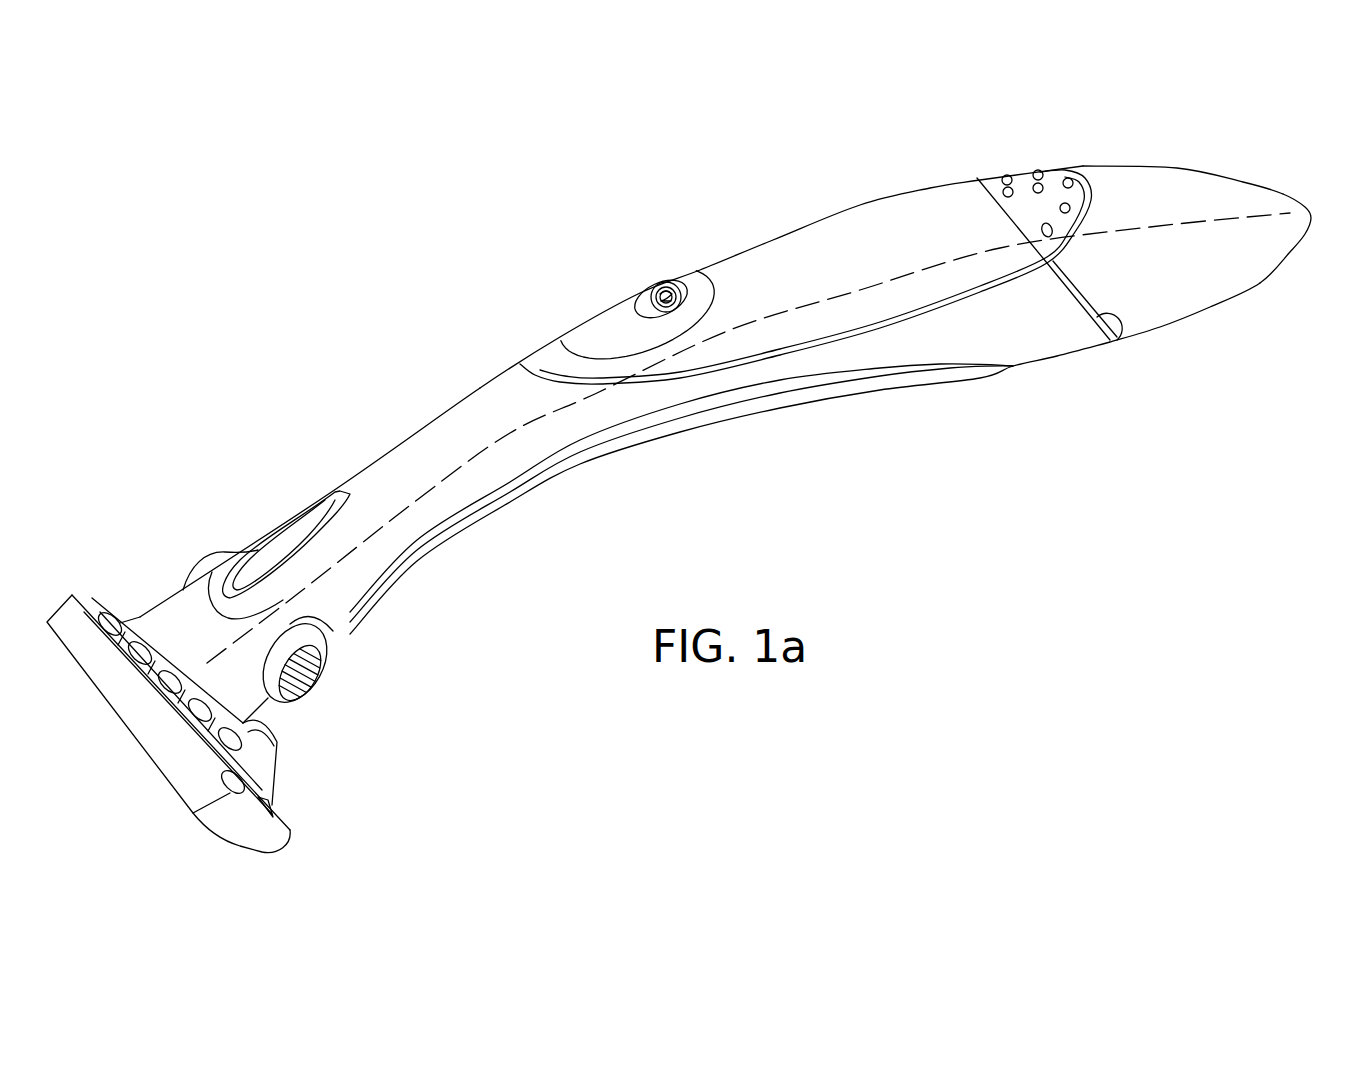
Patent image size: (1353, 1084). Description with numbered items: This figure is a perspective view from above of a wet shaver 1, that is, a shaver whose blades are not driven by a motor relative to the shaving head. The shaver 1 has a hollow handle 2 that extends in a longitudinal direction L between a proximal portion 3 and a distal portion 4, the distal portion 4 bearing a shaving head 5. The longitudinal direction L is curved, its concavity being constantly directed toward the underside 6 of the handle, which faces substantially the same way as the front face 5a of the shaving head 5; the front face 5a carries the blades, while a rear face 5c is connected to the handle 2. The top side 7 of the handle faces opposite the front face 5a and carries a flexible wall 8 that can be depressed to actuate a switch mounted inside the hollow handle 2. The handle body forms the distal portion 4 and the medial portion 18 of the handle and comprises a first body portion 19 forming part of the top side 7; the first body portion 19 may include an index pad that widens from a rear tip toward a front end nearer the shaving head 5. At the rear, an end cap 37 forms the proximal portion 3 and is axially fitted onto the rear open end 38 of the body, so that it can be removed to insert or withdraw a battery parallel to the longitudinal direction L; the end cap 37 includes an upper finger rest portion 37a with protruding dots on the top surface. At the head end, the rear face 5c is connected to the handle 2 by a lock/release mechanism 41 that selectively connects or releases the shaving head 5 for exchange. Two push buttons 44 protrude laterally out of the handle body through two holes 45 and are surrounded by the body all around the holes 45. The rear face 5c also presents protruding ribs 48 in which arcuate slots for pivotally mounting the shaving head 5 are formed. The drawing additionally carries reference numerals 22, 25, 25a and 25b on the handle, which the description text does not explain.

The wet shaver 1 is at (370, 280).
The hollow handle 2 is at (830, 203).
The proximal portion 3 is at (1297, 255).
The distal portion 4 is at (273, 720).
The shaving head 5 is at (280, 853).
The front face 5a is at (133, 737).
The rear face 5c is at (110, 600).
The underside 6 is at (547, 483).
The top side 7 is at (483, 413).
The flexible wall 8 is at (663, 287).
The medial portion 18 is at (717, 450).
The first body portion 19 is at (363, 560).
The recessed panel 22 is at (937, 203).
The opening 25 is at (280, 537).
The opening tip 25a is at (330, 490).
The opening base 25b is at (223, 567).
The end cap 37 is at (1170, 182).
The upper finger rest portion 37a is at (1053, 183).
The rear open end 38 is at (1107, 323).
The lock/release mechanism 41 is at (135, 618).
The push buttons 44 is at (203, 563).
The holes 45 is at (323, 620).
The protruding ribs 48 is at (260, 770).
The longitudinal direction L is at (573, 403).